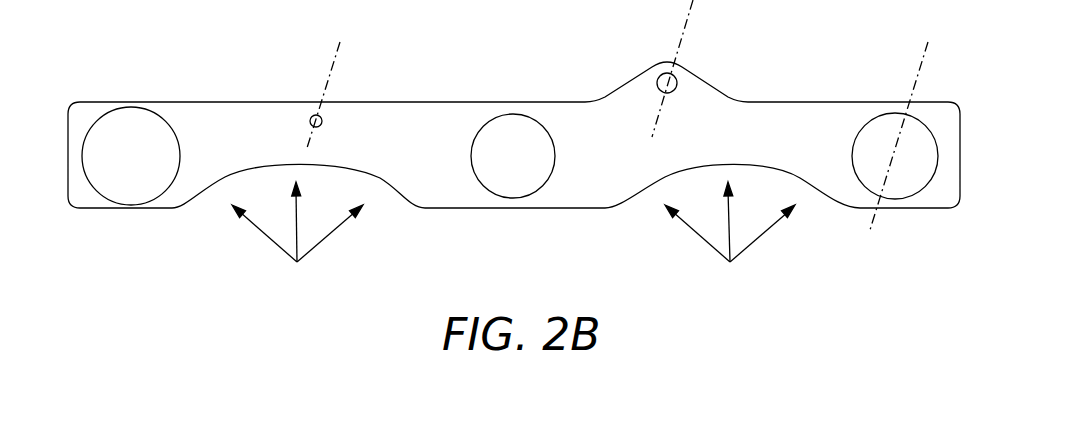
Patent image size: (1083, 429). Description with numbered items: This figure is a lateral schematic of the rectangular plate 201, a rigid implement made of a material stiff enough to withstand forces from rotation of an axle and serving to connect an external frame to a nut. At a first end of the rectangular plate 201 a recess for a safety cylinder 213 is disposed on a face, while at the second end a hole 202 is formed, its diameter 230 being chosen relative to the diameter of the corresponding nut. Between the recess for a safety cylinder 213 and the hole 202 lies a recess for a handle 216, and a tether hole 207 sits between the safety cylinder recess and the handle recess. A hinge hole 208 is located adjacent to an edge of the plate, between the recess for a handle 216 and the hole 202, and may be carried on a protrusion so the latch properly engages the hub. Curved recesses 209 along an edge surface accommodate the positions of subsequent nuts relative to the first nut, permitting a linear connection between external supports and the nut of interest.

The rectangular plate 201 is at (242, 115).
The hole 202 is at (889, 188).
The tether hole 207 is at (332, 112).
The hinge hole 208 is at (684, 82).
The curved recesses 209 is at (297, 262).
The recess for a safety cylinder 213 is at (129, 133).
The recess for a handle 216 is at (513, 135).
The diameter 230 is at (892, 113).